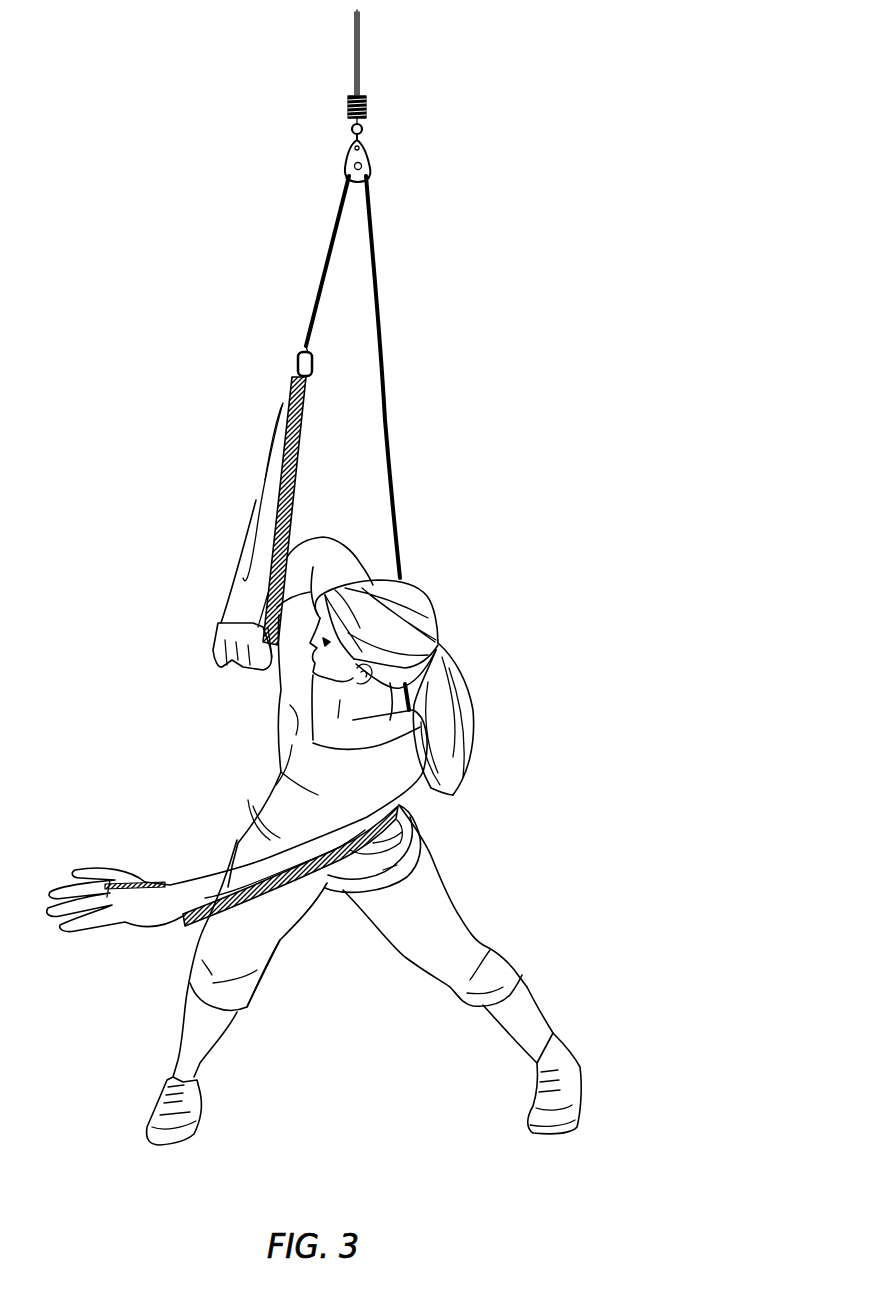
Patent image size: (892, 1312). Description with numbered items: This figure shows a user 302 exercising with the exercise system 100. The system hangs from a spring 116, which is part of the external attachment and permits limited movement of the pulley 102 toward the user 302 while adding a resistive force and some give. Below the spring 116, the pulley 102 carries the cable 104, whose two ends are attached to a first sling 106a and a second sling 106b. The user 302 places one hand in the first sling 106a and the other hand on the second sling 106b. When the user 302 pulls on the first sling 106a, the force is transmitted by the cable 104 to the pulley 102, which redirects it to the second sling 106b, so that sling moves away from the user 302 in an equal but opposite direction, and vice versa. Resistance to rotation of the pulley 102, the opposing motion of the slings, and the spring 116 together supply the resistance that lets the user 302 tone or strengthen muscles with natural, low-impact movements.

The exercise system 100 is at (302, 229).
The spring 116 is at (363, 102).
The pulley 102 is at (372, 152).
The cable 104 is at (383, 330).
The first sling 106a is at (262, 521).
The second sling 106b is at (210, 883).
The user 302 is at (265, 783).